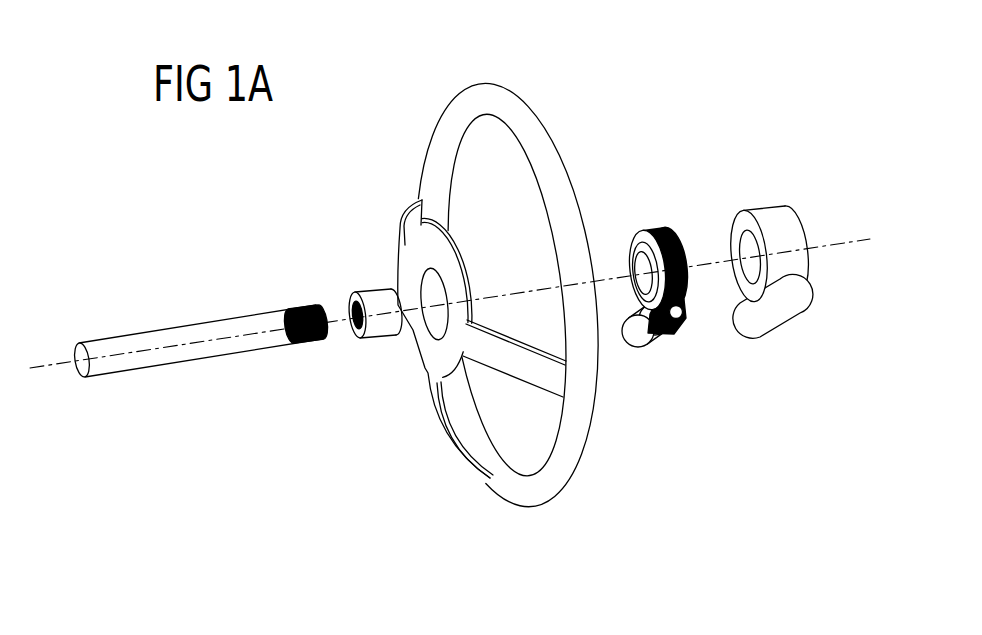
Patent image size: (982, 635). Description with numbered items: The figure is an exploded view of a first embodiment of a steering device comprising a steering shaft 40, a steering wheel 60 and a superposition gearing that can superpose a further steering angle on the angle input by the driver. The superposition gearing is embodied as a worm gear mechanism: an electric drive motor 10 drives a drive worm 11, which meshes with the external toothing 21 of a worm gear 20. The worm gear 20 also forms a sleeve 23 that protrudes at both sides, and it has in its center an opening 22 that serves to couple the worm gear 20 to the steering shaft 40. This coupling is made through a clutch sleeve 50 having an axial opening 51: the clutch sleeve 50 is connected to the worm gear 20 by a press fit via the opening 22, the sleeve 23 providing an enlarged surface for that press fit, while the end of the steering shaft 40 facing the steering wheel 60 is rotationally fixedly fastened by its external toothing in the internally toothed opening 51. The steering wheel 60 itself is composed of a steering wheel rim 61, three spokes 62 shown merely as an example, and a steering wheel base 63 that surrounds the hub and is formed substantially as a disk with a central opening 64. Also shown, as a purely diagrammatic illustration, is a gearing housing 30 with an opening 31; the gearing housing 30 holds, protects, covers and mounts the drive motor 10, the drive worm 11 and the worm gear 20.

The electric drive motor 10 is at (643, 347).
The drive worm 11 is at (678, 323).
The worm gear 20 is at (632, 241).
The external toothing 21 is at (666, 230).
The opening 22 is at (647, 285).
The sleeve 23 is at (635, 248).
The gearing housing 30 is at (769, 238).
The opening 31 is at (750, 243).
The steering shaft 40 is at (185, 362).
The clutch sleeve 50 is at (360, 364).
The axial opening 51 is at (357, 333).
The steering wheel 60 is at (475, 273).
The steering wheel rim 61 is at (553, 148).
The spokes 62 is at (515, 368).
The steering wheel base 63 is at (447, 268).
The central opening 64 is at (433, 292).